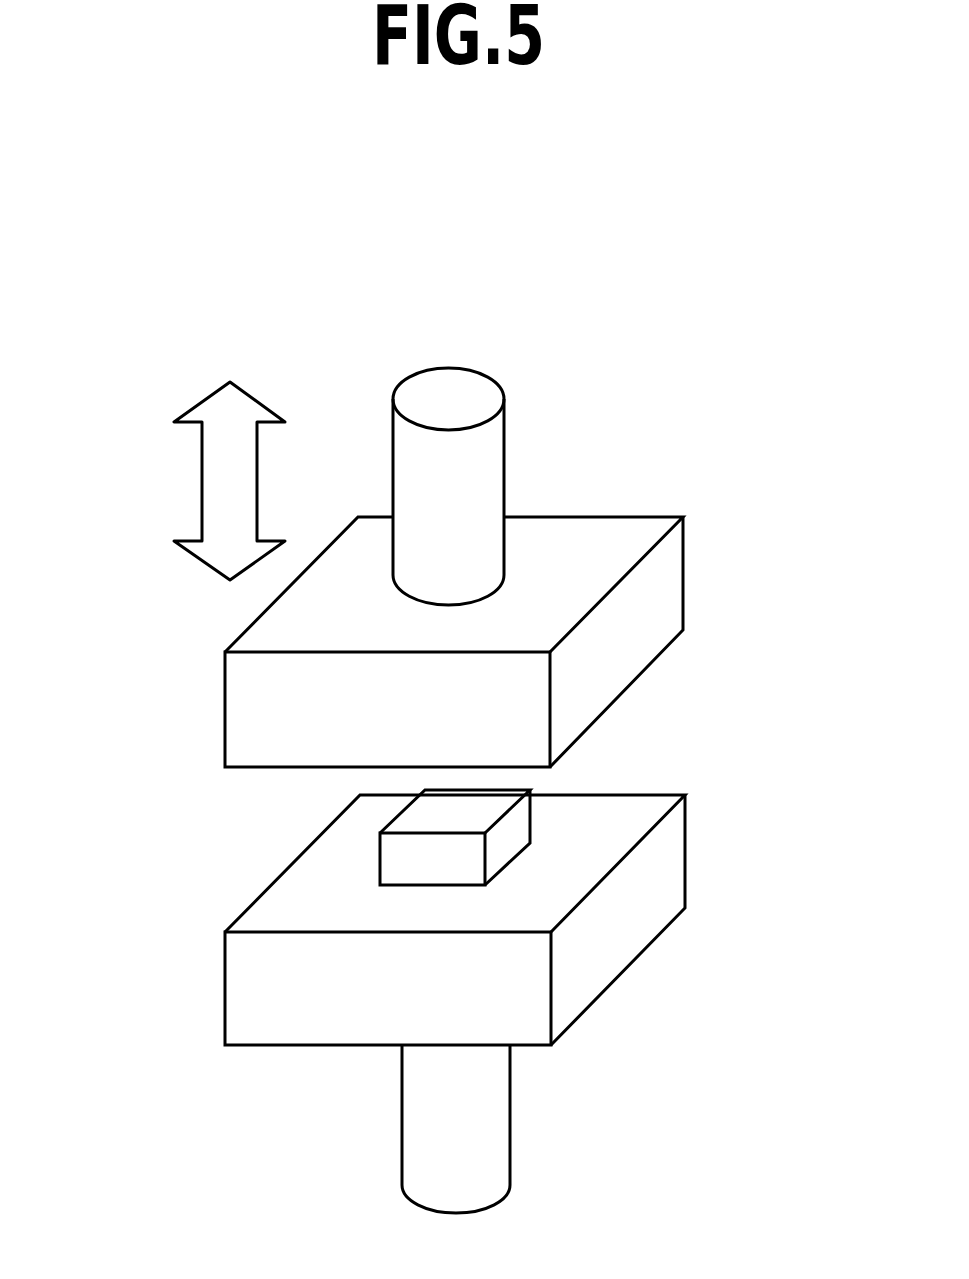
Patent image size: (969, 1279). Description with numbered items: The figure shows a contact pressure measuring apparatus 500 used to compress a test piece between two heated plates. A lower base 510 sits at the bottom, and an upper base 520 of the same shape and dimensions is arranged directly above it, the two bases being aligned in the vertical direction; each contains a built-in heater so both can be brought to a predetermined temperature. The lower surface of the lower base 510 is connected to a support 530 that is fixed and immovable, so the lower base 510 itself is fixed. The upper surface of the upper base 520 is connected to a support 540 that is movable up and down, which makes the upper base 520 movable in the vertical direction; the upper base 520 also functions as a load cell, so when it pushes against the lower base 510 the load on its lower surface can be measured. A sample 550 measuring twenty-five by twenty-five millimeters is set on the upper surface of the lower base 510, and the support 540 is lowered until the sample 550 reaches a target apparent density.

The contact pressure measuring apparatus 500 is at (786, 303).
The lower base 510 is at (242, 988).
The upper base 520 is at (603, 532).
The support 530 is at (412, 1122).
The support 540 is at (490, 465).
The sample 550 is at (395, 860).